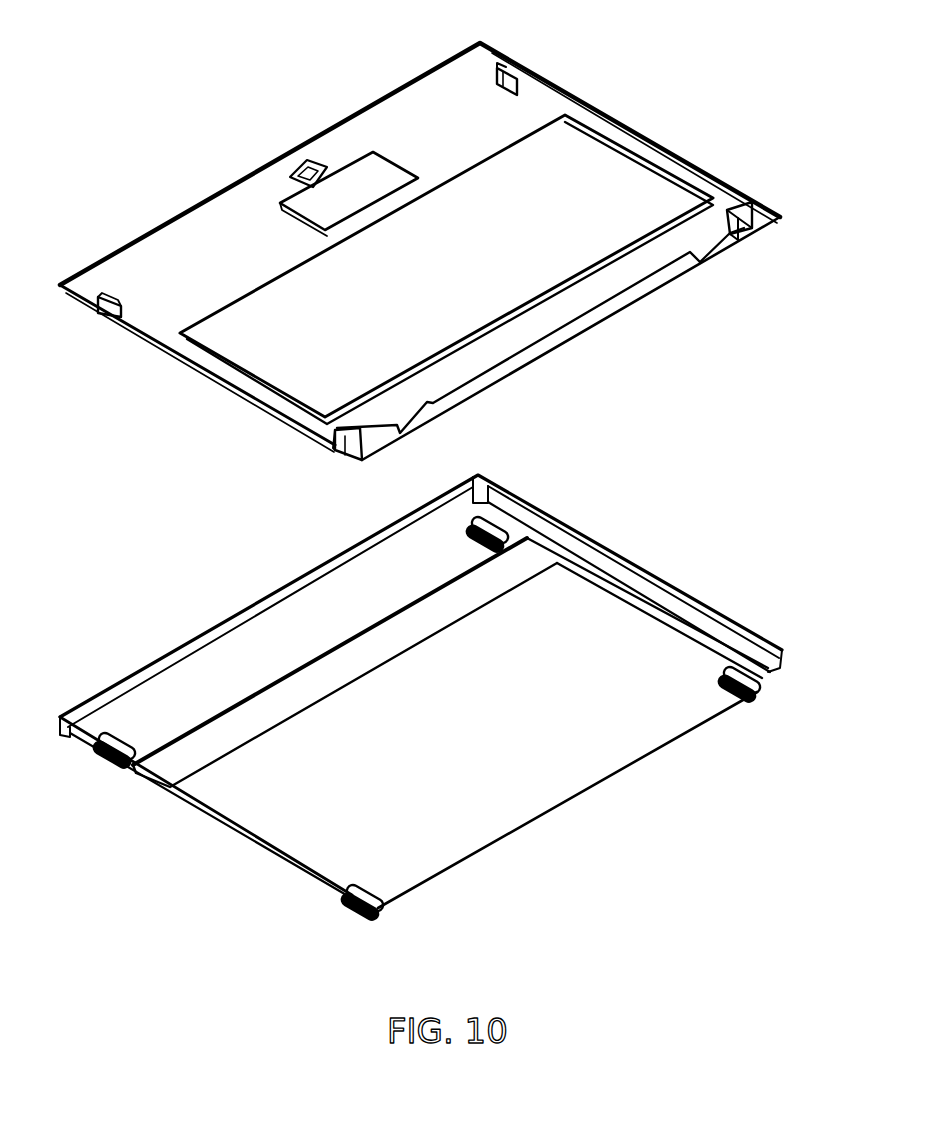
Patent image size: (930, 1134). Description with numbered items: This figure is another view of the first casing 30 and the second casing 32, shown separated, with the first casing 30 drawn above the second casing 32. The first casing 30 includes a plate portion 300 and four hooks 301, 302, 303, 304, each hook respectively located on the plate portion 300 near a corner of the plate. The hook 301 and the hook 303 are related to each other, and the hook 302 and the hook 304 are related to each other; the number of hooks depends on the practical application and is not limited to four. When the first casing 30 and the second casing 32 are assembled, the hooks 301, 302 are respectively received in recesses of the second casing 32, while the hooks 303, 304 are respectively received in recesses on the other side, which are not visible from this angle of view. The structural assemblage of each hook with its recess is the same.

The first casing 30 is at (277, 141).
The plate portion 300 is at (213, 252).
The hook 301 is at (108, 318).
The hook 302 is at (345, 458).
The hook 303 is at (508, 75).
The hook 304 is at (750, 216).
The second casing 32 is at (180, 640).